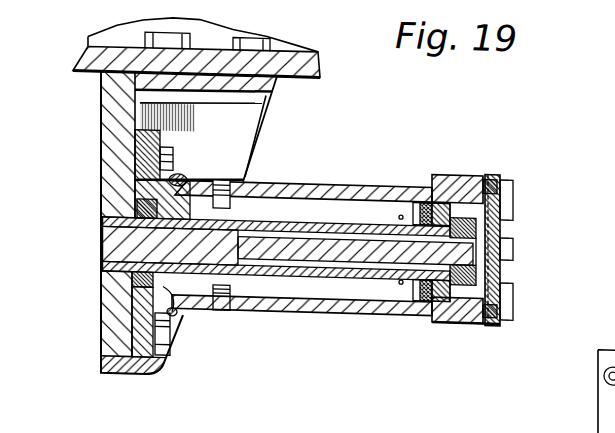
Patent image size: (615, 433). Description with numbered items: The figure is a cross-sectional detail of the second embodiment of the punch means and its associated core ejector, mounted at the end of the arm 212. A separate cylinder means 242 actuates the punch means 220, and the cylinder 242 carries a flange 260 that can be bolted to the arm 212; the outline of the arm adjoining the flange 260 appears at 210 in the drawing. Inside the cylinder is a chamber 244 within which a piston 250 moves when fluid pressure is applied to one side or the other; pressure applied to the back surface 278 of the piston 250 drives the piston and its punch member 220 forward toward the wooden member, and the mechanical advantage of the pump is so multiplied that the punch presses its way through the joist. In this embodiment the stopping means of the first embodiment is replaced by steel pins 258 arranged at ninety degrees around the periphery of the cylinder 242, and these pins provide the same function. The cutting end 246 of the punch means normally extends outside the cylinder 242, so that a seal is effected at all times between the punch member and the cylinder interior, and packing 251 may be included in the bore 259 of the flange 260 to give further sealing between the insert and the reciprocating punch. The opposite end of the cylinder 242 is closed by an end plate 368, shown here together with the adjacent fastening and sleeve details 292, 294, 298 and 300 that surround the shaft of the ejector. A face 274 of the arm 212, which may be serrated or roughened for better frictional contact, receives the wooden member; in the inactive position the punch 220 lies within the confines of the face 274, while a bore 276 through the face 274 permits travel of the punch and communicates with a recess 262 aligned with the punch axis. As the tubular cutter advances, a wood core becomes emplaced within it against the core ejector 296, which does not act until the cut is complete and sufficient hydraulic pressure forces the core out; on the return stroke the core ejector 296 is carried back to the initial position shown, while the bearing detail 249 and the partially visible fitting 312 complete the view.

The mounting surface 210 is at (113, 34).
The arm 212 is at (107, 112).
The punch means 220 is at (257, 303).
The separate cylinder means 242 is at (330, 187).
The chamber 244 is at (330, 211).
The cutting end 246 is at (103, 220).
The upper bearing 249 is at (502, 211).
The piston 250 is at (390, 282).
The packing 251 is at (100, 305).
The steel pins 258 is at (227, 175).
The bore 259 is at (178, 311).
The flange 260 is at (163, 128).
The recess 262 is at (254, 101).
The face 274 is at (100, 370).
The bore 276 is at (100, 259).
The back surface 278 is at (453, 305).
The bearing housing 292 is at (393, 185).
The lower sleeve 294 is at (345, 252).
The core ejector 296 is at (185, 255).
The inner shaft 298 is at (297, 232).
The nut 300 is at (505, 251).
The connector box 312 is at (598, 400).
The end plate 368 is at (500, 258).